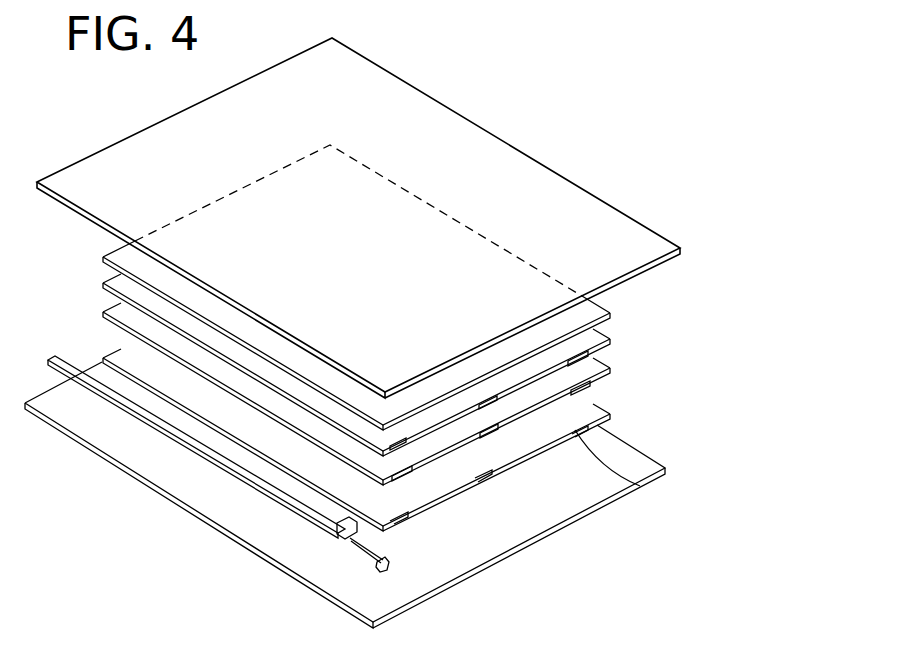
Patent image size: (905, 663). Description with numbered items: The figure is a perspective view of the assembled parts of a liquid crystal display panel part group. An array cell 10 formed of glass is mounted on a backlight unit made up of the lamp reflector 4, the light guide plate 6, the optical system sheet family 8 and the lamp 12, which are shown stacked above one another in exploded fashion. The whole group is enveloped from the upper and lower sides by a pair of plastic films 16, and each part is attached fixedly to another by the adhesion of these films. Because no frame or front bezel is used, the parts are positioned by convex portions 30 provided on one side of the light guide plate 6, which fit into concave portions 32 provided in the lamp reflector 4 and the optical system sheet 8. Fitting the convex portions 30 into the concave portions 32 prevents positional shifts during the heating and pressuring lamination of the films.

The plastic film 16 is at (565, 196).
The array cell 10 is at (577, 310).
The optical system sheet family 8 is at (580, 333).
The light guide plate 6 is at (597, 367).
The lamp reflector 4 is at (582, 413).
The convex portion 30 is at (585, 386).
The concave portion 32 is at (575, 428).
The lamp 12 is at (245, 475).